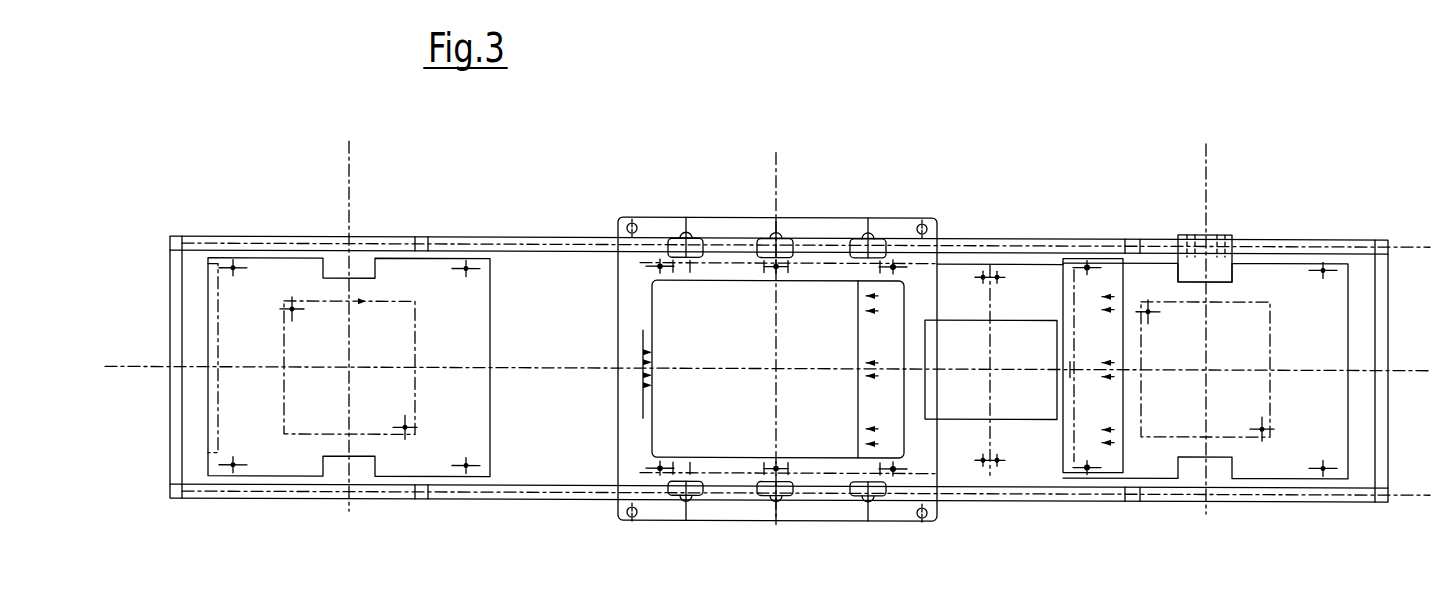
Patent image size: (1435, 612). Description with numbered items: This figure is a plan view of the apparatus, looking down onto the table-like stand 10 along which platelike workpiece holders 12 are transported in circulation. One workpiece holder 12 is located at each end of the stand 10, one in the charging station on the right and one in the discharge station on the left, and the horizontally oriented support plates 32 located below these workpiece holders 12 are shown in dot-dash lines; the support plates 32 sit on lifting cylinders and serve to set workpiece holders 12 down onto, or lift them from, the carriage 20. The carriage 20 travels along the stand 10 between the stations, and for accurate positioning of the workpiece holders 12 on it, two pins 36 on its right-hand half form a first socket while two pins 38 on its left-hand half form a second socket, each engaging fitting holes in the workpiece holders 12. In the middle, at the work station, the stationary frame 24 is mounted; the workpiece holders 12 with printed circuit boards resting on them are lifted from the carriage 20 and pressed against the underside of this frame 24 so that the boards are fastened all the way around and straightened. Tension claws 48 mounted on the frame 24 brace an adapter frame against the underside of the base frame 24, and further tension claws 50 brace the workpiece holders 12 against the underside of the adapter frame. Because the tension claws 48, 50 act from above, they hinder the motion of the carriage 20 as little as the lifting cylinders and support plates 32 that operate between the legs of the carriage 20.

The stand 10 is at (538, 238).
The workpiece holder 12 is at (431, 269).
The carriage 20 is at (1018, 283).
The frame 24 is at (627, 309).
The support plate 32 is at (415, 352).
The pin 36 is at (1088, 266).
The pin 38 is at (893, 266).
The tension claw 48 is at (782, 242).
The tension claw 50 is at (690, 242).